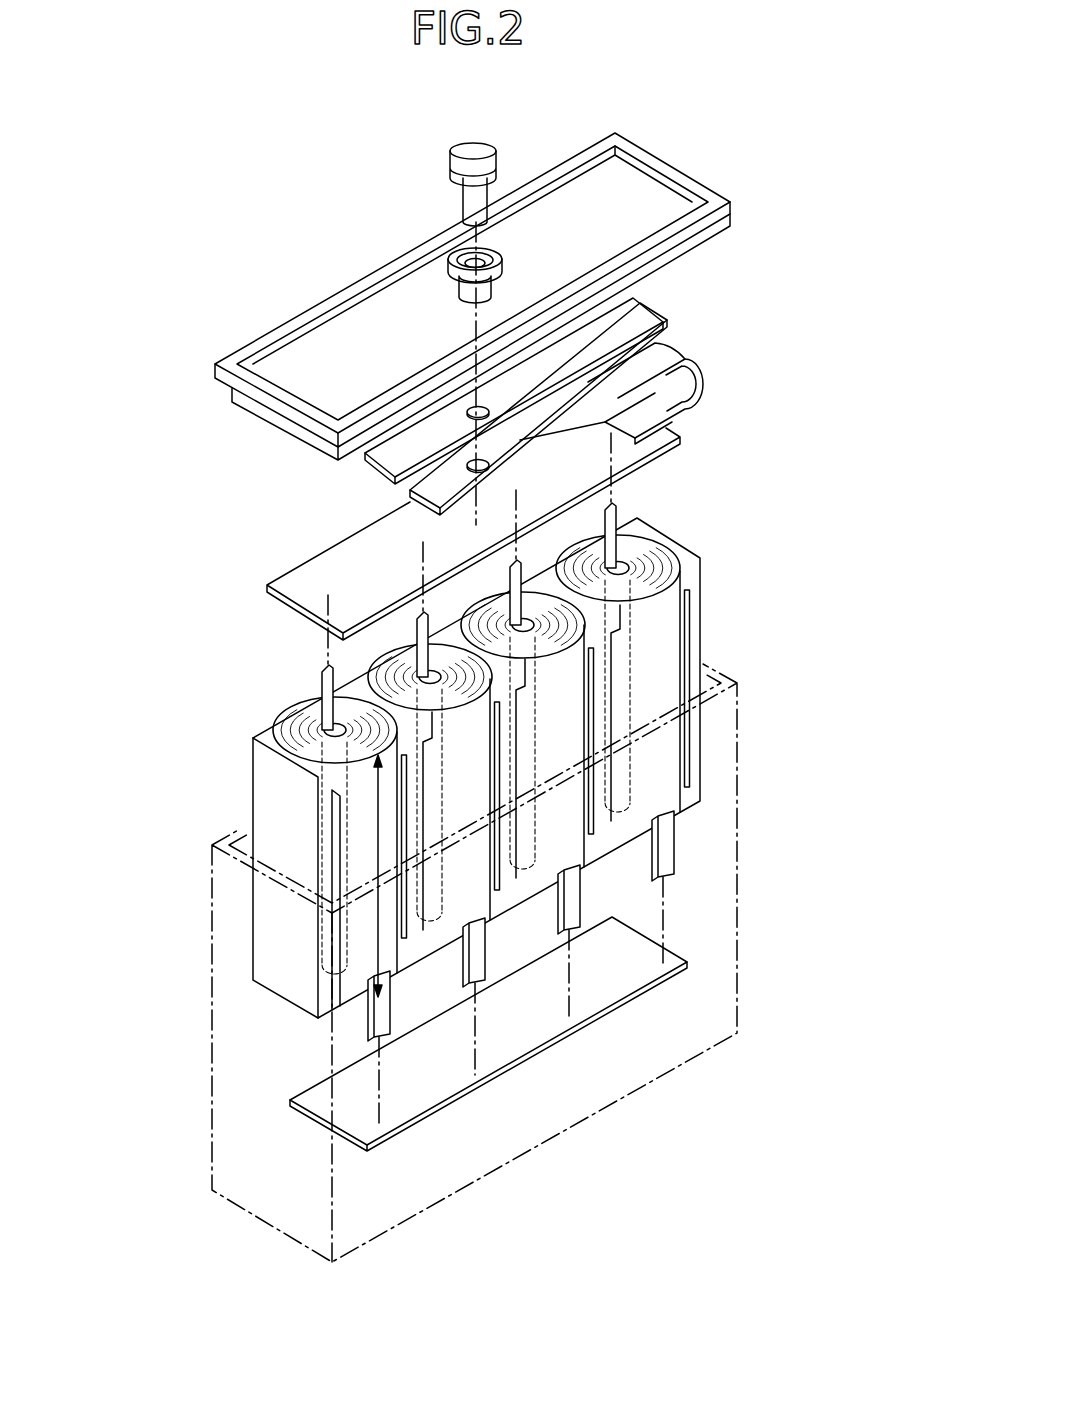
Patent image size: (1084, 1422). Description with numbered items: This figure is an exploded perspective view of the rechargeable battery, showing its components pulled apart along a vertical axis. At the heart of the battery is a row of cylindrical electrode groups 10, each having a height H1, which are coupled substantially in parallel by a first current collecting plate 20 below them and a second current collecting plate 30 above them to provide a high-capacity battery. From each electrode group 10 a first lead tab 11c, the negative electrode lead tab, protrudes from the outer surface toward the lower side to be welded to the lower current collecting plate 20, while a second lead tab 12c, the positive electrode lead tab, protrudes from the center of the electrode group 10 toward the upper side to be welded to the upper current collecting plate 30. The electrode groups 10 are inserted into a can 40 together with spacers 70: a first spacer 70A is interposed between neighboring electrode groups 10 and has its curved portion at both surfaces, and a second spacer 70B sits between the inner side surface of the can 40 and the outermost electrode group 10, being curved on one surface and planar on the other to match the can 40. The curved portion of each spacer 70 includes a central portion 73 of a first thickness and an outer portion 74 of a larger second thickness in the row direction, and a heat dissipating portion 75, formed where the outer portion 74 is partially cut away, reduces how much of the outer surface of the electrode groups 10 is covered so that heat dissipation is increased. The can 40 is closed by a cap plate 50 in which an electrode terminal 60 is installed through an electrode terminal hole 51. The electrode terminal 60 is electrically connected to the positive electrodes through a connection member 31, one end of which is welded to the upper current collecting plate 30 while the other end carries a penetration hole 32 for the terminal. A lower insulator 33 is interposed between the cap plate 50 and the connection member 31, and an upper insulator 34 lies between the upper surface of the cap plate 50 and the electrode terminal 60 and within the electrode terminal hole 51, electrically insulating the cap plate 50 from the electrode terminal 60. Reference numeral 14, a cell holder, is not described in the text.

The electrode group 10 is at (497, 847).
The first lead tab 11c is at (668, 850).
The second lead tab 12c is at (321, 682).
The cell holder 14 is at (475, 842).
The first current collecting plate 20 is at (620, 976).
The second current collecting plate 30 is at (652, 430).
The connection member 31 is at (672, 356).
The penetration hole 32 is at (497, 450).
The lower insulator 33 is at (388, 462).
The upper insulator 34 is at (409, 249).
The can 40 is at (745, 947).
The cap plate 50 is at (645, 190).
The electrode terminal hole 51 is at (466, 298).
The electrode terminal 60 is at (460, 152).
The spacer 70 is at (443, 847).
The first spacer 70A is at (403, 960).
The second spacer 70B is at (371, 915).
The central portion 73 is at (487, 608).
The outer portion 74 is at (500, 633).
The heat dissipating portion 75 is at (493, 840).
The height of the electrode groups H1 is at (363, 876).